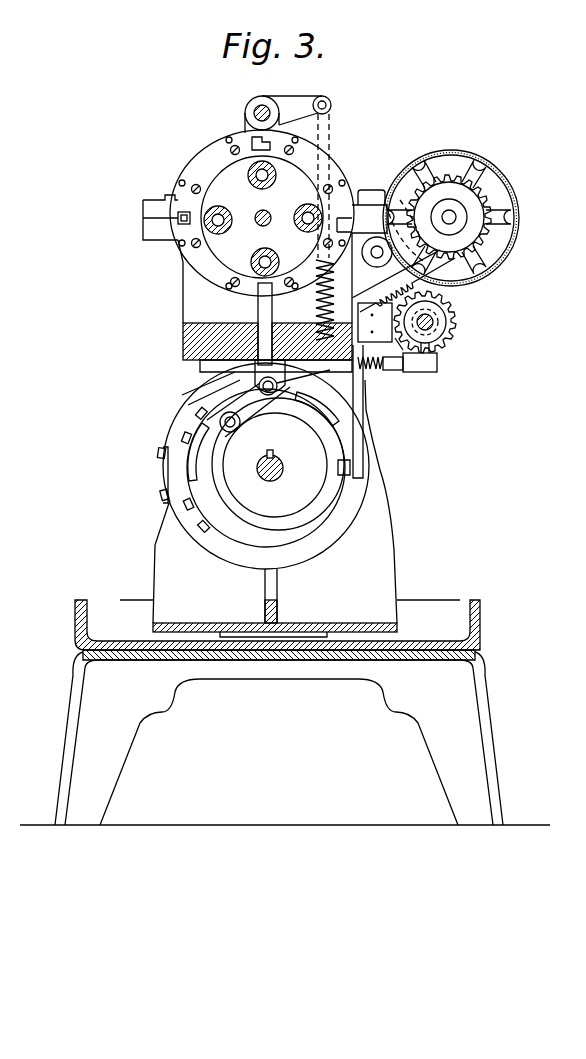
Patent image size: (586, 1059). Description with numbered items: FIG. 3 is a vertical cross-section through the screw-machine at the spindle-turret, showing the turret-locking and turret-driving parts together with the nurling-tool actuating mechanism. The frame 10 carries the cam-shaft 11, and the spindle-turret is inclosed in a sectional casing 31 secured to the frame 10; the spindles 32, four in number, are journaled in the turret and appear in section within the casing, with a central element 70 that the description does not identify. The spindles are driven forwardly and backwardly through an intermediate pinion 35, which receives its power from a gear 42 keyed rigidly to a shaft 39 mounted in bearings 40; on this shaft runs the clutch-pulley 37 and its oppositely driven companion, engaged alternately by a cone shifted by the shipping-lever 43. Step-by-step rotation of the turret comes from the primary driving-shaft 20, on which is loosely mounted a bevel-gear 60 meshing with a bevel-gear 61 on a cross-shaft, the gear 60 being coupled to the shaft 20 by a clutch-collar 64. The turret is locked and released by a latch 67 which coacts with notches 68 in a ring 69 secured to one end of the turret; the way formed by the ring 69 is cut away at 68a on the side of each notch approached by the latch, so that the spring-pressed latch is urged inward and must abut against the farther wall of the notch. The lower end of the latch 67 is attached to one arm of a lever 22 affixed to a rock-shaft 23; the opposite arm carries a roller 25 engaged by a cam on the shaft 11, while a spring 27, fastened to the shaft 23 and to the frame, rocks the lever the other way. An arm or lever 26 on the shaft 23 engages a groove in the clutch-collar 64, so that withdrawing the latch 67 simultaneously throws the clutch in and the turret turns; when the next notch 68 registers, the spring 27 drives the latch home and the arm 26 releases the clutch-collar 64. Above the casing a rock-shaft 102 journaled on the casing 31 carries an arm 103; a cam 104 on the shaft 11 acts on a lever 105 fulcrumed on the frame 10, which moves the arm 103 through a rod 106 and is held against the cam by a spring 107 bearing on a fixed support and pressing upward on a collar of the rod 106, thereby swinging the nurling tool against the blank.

The frame 10 is at (388, 549).
The cam-shaft 11 is at (284, 471).
The primary driving-shaft 20 is at (438, 325).
The lever 22 is at (260, 377).
The rock-shaft 23 is at (397, 366).
The roller 25 is at (163, 428).
The arm or lever 26 is at (437, 356).
The spring 27 is at (368, 370).
The sectional casing 31 is at (185, 313).
The spindles 32 is at (207, 208).
The intermediate pinion 35 is at (440, 282).
The clutch-pulley 37 is at (517, 229).
The shaft 39 is at (452, 219).
The bearings 40 is at (462, 236).
The gear 42 is at (447, 176).
The shipping-lever 43 is at (364, 422).
The bevel-gear 60 is at (436, 343).
The bevel-gear 61 is at (405, 348).
The clutch-collar 64 is at (456, 312).
The latch 67 is at (257, 334).
The notches 68 is at (258, 146).
The depressed parts of ring 68a is at (240, 137).
The ring 69 is at (207, 167).
The hub 70 is at (262, 212).
The rock-shaft 102 is at (262, 97).
The arm 103 is at (307, 88).
The cam 104 is at (320, 438).
The lever 105 is at (258, 405).
The rod 106 is at (332, 108).
The spring 107 is at (317, 305).